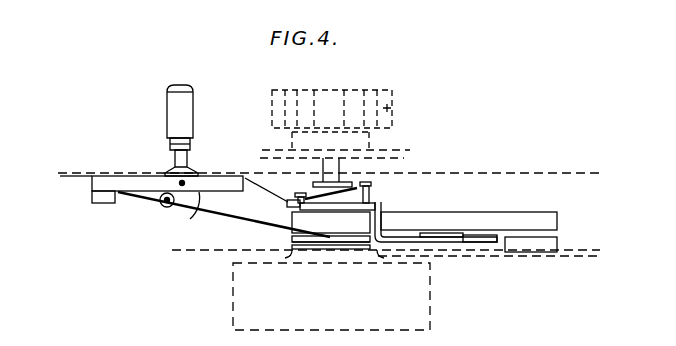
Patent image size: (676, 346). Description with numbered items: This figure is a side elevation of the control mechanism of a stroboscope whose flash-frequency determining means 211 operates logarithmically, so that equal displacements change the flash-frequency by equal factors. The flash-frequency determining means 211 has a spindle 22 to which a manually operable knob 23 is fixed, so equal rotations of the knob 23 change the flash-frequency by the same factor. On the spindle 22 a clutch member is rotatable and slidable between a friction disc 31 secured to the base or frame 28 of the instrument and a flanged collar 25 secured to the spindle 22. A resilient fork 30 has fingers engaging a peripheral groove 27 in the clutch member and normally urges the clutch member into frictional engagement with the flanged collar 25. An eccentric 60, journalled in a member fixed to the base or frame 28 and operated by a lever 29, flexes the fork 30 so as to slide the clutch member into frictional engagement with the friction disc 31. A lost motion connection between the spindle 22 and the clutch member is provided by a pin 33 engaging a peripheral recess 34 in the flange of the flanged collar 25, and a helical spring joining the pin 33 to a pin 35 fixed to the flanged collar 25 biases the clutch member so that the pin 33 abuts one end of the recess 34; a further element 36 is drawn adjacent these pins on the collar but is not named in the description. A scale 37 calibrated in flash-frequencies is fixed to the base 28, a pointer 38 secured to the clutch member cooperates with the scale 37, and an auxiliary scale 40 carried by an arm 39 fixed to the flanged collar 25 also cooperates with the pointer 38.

The spindle 22 is at (332, 168).
The manually operable knob 23 is at (393, 108).
The flanged collar 25 is at (241, 176).
The peripheral groove 27 is at (352, 238).
The base or frame 28 is at (437, 253).
The lever 29 is at (185, 112).
The resilient fork 30 is at (193, 216).
The friction disc 31 is at (290, 247).
The pin 33 is at (300, 193).
The peripheral recess 34 is at (343, 185).
The pin 35 is at (311, 188).
The right post 36 is at (372, 189).
The scale 37 is at (557, 247).
The pointer 38 is at (503, 222).
The arm 39 is at (398, 234).
The auxiliary scale 40 is at (447, 233).
The eccentric 60 is at (162, 202).
The flash-frequency determining means 211 is at (420, 300).